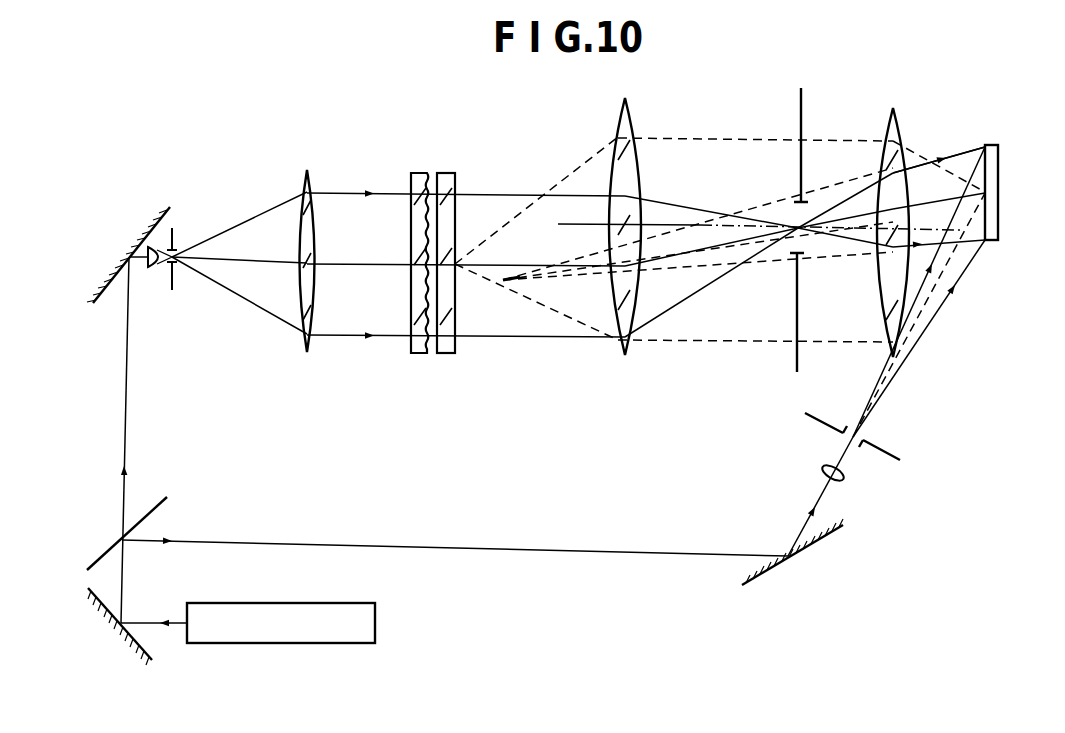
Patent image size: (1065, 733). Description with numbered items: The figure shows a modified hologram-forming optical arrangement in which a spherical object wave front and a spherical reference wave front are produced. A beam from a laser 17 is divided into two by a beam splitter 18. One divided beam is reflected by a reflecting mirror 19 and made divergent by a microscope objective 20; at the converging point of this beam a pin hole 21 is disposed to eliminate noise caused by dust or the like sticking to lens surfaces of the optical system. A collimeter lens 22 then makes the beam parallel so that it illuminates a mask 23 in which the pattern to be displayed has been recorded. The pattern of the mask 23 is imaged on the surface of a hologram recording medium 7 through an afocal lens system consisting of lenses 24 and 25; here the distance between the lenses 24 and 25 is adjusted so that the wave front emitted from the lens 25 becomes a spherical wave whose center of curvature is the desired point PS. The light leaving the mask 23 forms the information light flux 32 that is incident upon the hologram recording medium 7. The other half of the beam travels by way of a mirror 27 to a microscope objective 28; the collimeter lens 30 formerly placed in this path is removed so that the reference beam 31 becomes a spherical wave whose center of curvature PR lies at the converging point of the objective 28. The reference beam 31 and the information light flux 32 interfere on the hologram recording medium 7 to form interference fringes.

The hologram recording medium 7 is at (998, 200).
The laser 17 is at (375, 625).
The beam splitter 18 is at (153, 508).
The reflecting mirror 19 is at (170, 207).
The objective 20 is at (151, 268).
The pin hole 21 is at (175, 278).
The collimeter lens 22 is at (312, 178).
The mask 23 is at (452, 173).
The lens 24 is at (641, 113).
The lens 25 is at (898, 120).
The mirror 27 is at (770, 581).
The microscope objective 28 is at (845, 478).
The collimeter lens 30 is at (900, 455).
The reference beam 31 is at (927, 328).
The information light flux 32 is at (968, 152).
The center of curvature of the object wave PS is at (503, 283).
The center of curvature of the reference wave PR is at (870, 432).